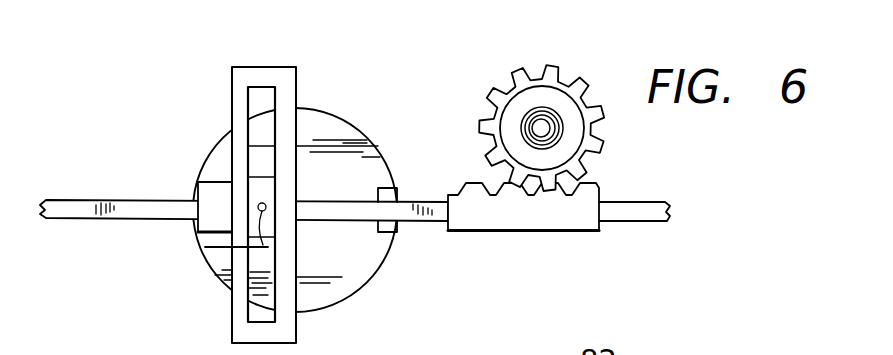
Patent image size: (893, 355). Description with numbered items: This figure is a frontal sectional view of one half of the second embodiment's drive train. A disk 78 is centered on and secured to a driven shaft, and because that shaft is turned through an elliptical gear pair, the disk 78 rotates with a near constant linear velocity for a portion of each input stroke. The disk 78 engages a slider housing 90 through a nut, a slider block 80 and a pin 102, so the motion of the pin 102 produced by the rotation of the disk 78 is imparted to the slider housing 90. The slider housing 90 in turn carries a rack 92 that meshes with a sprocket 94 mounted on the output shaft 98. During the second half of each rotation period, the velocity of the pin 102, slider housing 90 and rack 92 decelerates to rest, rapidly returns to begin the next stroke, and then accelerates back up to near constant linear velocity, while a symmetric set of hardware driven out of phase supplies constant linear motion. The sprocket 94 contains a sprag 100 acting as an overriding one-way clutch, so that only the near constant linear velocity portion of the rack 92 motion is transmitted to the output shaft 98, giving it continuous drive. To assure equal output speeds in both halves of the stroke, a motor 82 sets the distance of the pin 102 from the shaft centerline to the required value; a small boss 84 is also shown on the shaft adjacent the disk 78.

The disk 78 is at (362, 291).
The slider block 80 is at (260, 183).
The motor 82 is at (200, 223).
The boss 84 is at (378, 154).
The slider housing 90 is at (113, 218).
The rack 92 is at (563, 232).
The sprocket 94 is at (568, 86).
The output shaft 98 is at (542, 127).
The sprag 100 is at (567, 148).
The pin 102 is at (205, 247).